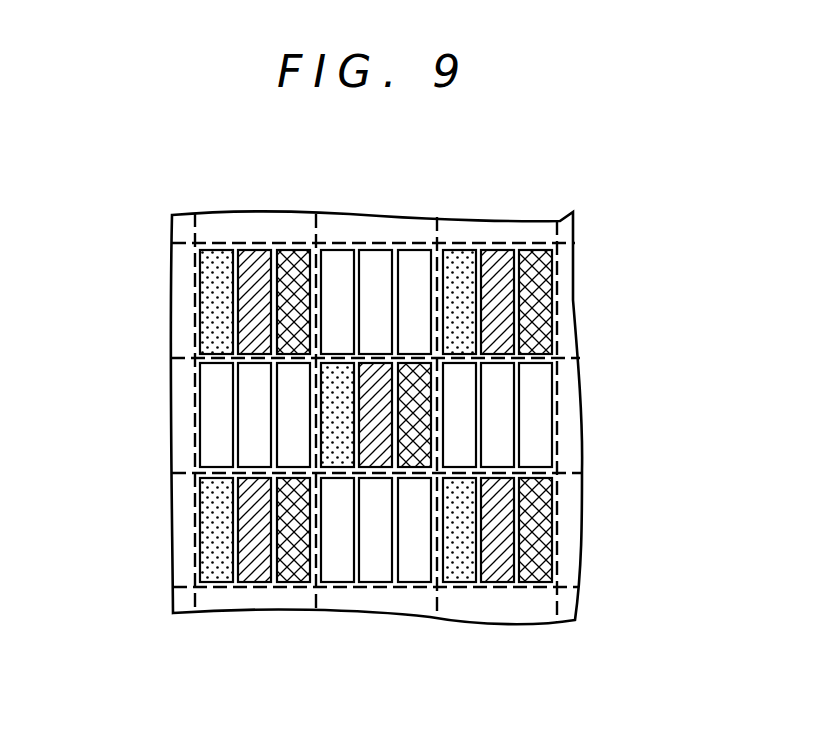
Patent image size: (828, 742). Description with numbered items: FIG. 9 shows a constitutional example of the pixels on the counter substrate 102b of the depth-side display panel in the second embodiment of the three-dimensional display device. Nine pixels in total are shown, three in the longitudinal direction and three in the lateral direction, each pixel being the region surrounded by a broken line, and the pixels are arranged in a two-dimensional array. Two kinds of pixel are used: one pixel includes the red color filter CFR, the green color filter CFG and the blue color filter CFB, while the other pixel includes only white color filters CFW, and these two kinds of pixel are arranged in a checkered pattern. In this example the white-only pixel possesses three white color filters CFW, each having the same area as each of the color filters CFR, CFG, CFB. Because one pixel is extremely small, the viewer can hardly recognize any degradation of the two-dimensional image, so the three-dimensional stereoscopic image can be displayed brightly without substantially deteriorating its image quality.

The red color filter CFR is at (206, 274).
The green color filter CFG is at (241, 304).
The blue color filter CFB is at (282, 333).
The white color filter CFW is at (206, 388).
The counter substrate 102b is at (576, 284).